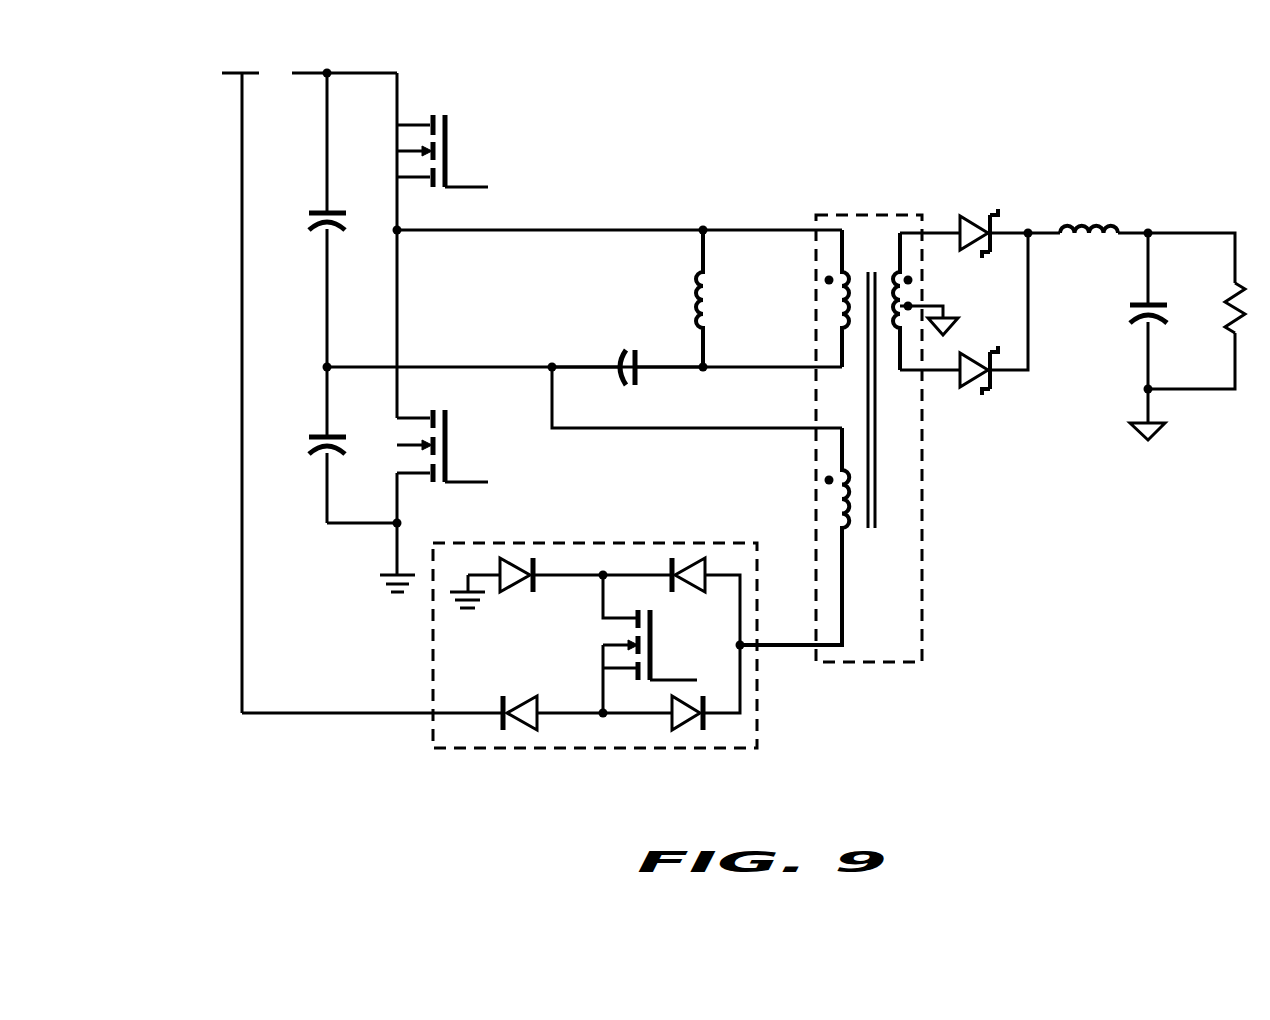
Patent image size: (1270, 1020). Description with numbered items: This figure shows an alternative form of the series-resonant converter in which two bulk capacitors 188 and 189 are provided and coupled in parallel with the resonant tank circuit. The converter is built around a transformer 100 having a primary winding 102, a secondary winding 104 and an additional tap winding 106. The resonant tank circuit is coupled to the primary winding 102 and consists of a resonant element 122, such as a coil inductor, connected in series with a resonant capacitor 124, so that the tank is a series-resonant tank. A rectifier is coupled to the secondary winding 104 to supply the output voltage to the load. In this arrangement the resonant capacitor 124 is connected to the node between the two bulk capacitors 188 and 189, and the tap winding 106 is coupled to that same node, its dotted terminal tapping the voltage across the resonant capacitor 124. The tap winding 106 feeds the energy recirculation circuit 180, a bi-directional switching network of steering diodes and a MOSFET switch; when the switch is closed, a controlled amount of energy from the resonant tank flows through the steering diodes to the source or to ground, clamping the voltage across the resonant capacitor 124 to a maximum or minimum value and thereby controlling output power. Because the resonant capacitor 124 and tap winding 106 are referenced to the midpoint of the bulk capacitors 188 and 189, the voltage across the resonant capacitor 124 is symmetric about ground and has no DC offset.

The transformer 100 is at (836, 213).
The primary winding 102 is at (848, 330).
The secondary winding 104 is at (886, 330).
The tap winding 106 is at (848, 530).
The resonant element 122 is at (745, 308).
The resonant capacitor 124 is at (637, 343).
The energy recirculation circuit 180 is at (463, 750).
The bulk capacitor 188 is at (301, 223).
The bulk capacitor 189 is at (301, 450).